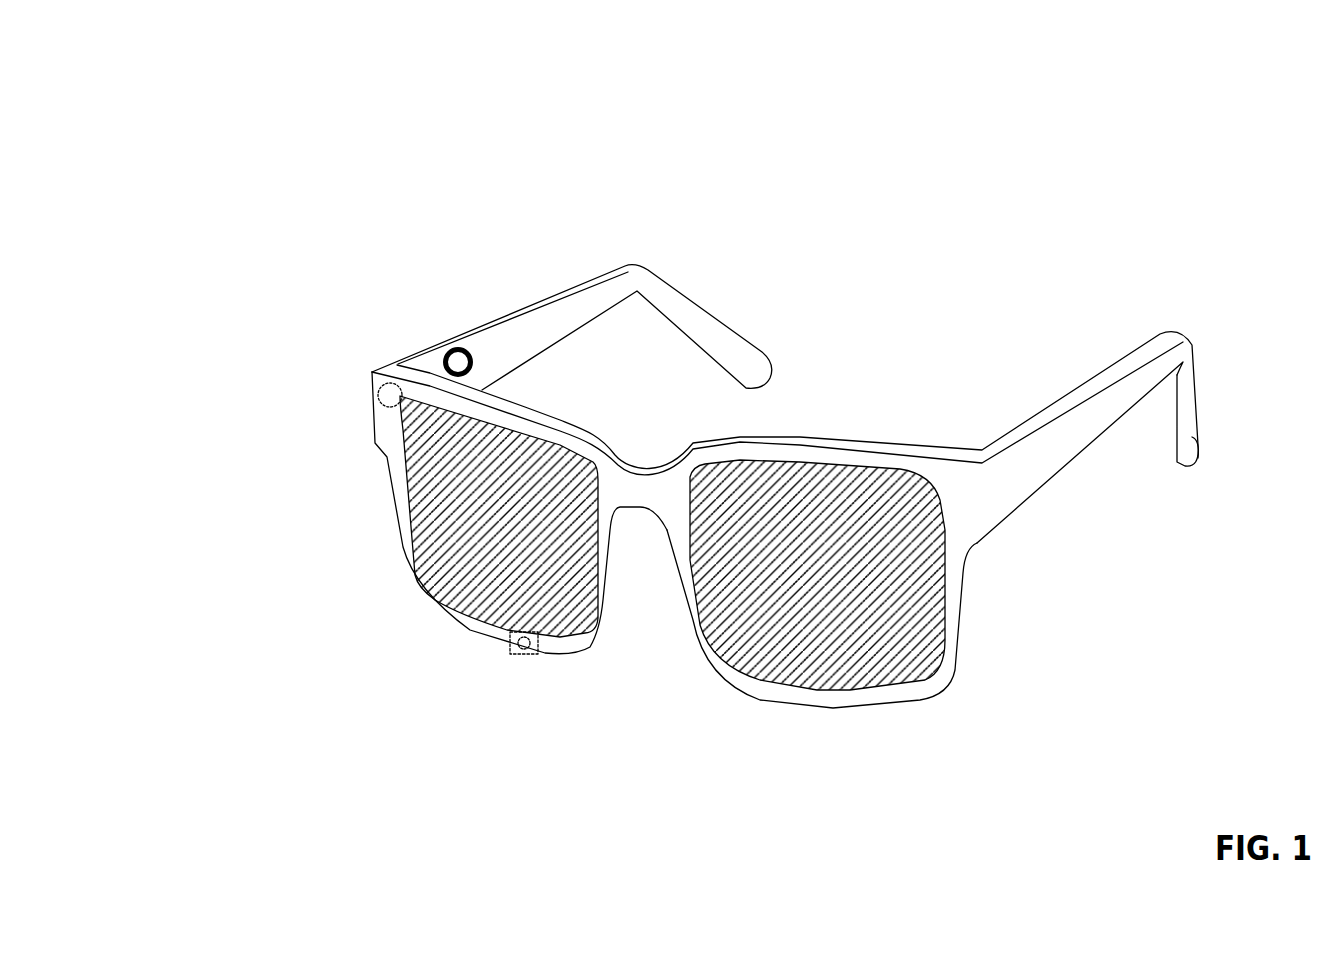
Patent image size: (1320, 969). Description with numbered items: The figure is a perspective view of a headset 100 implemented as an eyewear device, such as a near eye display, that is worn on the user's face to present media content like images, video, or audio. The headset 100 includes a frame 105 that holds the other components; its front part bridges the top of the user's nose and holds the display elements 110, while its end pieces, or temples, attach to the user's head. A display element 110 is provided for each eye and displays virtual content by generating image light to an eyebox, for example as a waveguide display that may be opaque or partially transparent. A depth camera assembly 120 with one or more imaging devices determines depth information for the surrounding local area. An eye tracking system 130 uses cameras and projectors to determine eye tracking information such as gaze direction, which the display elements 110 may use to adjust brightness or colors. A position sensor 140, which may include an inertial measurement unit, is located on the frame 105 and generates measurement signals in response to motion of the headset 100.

The headset 100 is at (157, 86).
The frame 105 is at (1010, 420).
The display element 110 is at (447, 517).
The depth camera assembly 120 is at (393, 393).
The eye tracking system 130 is at (443, 344).
The position sensor 140 is at (523, 655).